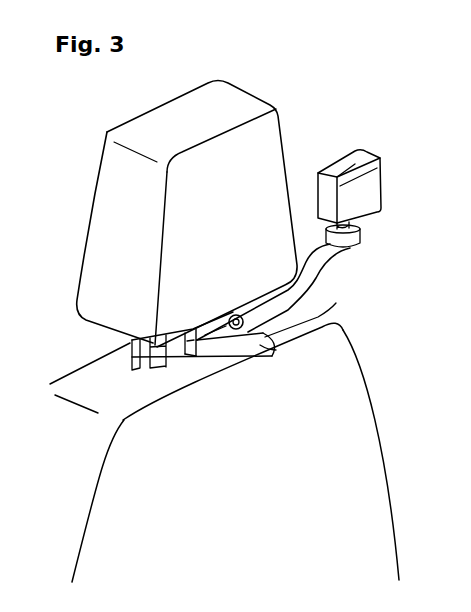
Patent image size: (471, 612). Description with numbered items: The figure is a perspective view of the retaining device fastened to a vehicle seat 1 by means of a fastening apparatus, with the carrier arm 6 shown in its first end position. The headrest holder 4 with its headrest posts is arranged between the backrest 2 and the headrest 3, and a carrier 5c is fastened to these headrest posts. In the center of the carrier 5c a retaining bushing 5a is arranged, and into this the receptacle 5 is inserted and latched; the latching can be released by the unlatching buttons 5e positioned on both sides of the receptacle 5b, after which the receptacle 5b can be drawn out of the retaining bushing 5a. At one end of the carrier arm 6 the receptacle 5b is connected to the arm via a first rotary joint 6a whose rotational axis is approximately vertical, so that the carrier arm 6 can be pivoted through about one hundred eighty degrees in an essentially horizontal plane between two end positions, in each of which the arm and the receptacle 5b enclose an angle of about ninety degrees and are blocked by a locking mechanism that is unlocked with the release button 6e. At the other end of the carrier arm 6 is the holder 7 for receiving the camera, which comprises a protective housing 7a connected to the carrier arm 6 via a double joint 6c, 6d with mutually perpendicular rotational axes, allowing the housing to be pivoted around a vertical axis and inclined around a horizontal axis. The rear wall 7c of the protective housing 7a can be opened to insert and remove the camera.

The vehicle seat 1 is at (324, 243).
The backrest 2 is at (363, 453).
The headrest 3 is at (107, 210).
The headrest holder 4 is at (131, 371).
The receptacle 5 is at (203, 361).
The retaining bushing 5a is at (203, 357).
The receptacle 5b is at (257, 368).
The carrier 5c is at (195, 328).
The unlatching buttons 5e is at (216, 320).
The carrier arm 6 is at (308, 299).
The first rotary joint 6a is at (272, 351).
The double joint 6c is at (361, 226).
The double joint 6d is at (364, 245).
The release button 6e is at (237, 315).
The holder 7 is at (385, 166).
The protective housing 7a is at (365, 153).
The rear wall 7c is at (397, 203).